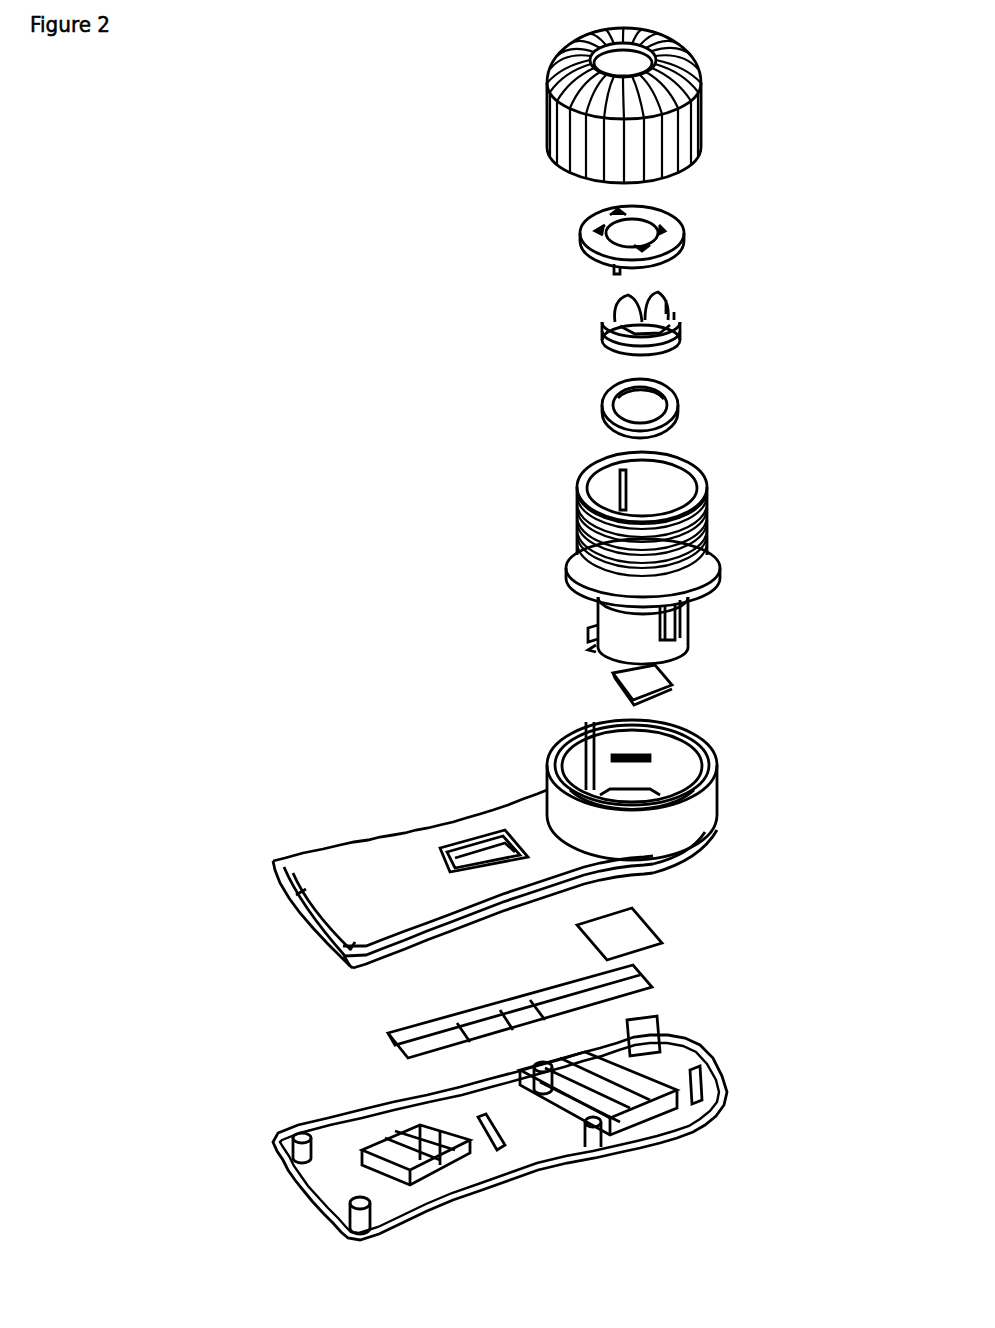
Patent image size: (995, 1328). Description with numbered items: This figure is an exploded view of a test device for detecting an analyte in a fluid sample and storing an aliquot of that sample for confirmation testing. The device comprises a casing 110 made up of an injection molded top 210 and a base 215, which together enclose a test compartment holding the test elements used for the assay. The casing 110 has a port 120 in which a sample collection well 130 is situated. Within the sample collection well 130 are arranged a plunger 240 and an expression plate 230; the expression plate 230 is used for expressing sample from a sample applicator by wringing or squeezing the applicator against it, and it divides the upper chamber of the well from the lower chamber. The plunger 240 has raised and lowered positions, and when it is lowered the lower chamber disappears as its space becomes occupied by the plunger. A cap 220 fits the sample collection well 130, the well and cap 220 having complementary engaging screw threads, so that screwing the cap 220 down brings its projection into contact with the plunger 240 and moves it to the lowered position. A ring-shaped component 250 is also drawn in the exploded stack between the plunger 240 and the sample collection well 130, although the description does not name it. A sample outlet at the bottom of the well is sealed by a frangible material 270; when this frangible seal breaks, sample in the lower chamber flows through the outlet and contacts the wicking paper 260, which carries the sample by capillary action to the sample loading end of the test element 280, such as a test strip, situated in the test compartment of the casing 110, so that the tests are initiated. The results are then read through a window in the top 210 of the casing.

The casing 110 is at (263, 833).
The port 120 is at (670, 752).
The sample collection well 130 is at (728, 494).
The injection molded top 210 is at (365, 862).
The base 215 is at (715, 1080).
The cap 220 is at (700, 82).
The expression plate 230 is at (690, 226).
The plunger 240 is at (680, 330).
The O-ring seal 250 is at (680, 405).
The wicking paper 260 is at (672, 684).
The frangible material 270 is at (630, 932).
The test element 280 is at (640, 985).